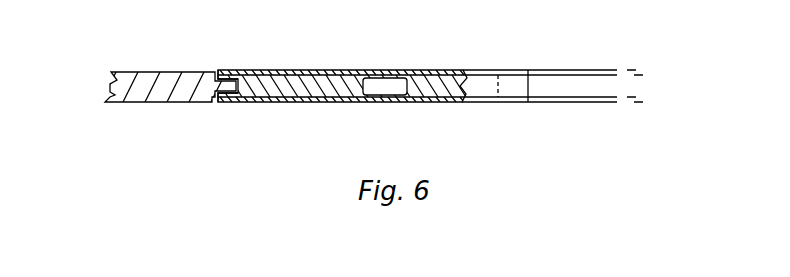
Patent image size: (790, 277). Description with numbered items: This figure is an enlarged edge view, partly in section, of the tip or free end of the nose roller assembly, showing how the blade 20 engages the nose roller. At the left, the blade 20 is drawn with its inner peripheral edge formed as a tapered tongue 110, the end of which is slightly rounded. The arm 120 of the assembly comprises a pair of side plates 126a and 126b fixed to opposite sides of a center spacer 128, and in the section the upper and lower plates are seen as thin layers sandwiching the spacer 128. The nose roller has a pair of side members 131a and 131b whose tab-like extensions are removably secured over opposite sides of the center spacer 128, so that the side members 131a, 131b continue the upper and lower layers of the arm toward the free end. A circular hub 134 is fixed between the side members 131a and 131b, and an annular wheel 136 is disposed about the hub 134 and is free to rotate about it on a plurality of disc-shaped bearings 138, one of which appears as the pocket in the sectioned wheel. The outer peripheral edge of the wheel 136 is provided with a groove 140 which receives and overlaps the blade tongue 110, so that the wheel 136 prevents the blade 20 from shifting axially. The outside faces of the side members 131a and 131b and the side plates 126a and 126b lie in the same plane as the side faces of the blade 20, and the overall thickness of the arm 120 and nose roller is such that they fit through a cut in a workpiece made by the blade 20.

The blade 20 is at (153, 82).
The tapered tongue 110 is at (213, 81).
The arm 120 is at (613, 68).
The side plate 126a is at (553, 97).
The side plate 126b is at (552, 77).
The center spacer 128 is at (612, 86).
The side member 131a is at (478, 102).
The side member 131b is at (477, 73).
The circular hub 134 is at (430, 86).
The annular wheel 136 is at (300, 102).
The disc-shaped bearings 138 is at (380, 83).
The groove 140 is at (222, 103).